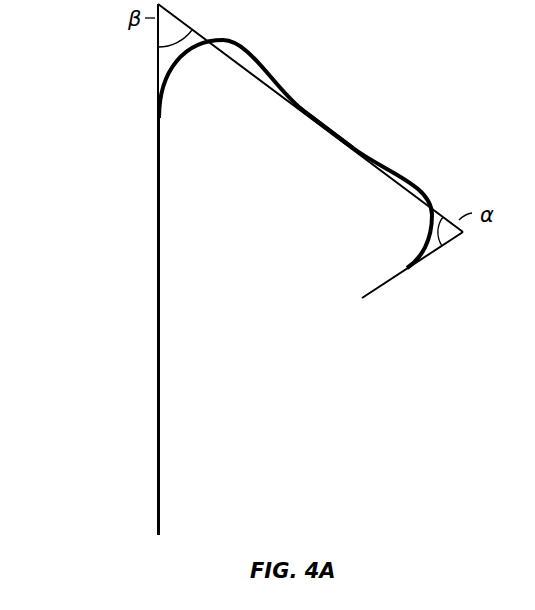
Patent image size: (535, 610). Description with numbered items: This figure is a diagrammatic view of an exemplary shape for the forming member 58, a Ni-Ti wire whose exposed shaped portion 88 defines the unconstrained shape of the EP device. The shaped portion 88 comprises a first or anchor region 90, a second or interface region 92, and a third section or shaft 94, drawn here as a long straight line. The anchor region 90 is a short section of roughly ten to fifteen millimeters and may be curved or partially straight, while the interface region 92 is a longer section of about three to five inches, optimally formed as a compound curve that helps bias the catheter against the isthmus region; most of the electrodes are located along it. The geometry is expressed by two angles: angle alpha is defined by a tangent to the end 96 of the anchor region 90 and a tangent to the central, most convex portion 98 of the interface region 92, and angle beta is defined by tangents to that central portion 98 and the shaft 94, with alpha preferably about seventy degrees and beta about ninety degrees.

The forming member 58 is at (161, 462).
The shaped portion 88 is at (384, 41).
The anchor region 90 is at (392, 218).
The interface region 92 is at (325, 138).
The shaft 94 is at (127, 205).
The end of the first section 96 is at (405, 272).
The central portion of the second section 98 is at (325, 122).